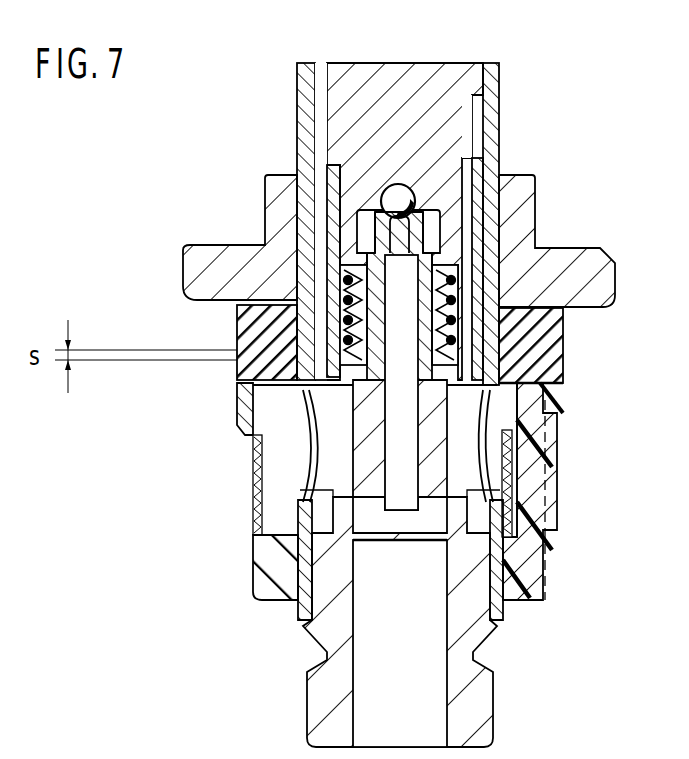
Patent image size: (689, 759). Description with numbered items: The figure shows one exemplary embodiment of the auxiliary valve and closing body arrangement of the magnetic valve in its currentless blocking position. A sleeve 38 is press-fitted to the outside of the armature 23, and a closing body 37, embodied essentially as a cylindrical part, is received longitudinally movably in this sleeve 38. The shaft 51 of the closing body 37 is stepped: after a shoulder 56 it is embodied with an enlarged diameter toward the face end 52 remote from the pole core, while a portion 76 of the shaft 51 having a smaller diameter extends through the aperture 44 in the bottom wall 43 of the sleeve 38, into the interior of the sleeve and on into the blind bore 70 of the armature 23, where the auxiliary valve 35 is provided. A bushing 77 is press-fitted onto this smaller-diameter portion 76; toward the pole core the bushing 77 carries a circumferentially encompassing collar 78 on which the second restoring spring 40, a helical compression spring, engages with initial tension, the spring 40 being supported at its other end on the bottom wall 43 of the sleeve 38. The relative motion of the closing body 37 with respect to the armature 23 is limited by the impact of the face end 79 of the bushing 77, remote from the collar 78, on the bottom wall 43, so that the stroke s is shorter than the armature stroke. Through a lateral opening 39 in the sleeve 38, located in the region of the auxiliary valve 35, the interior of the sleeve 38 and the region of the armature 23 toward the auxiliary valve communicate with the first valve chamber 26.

The armature 23 is at (448, 74).
The sleeve 38 is at (333, 188).
The auxiliary valve 35 is at (430, 195).
The blind bore 70 is at (433, 214).
The lateral opening 39 is at (337, 258).
The collar 78 is at (343, 273).
The bushing 77 is at (362, 322).
The second restoring spring 40 is at (245, 336).
The smaller-diameter portion 76 is at (562, 317).
The face end 79 is at (563, 370).
The bottom wall 43 is at (560, 386).
The aperture 44 is at (520, 407).
The shoulder 56 is at (547, 445).
The closing body 37 is at (340, 413).
The shaft 51 is at (330, 438).
The first valve chamber 26 is at (330, 473).
The face end 52 is at (360, 522).